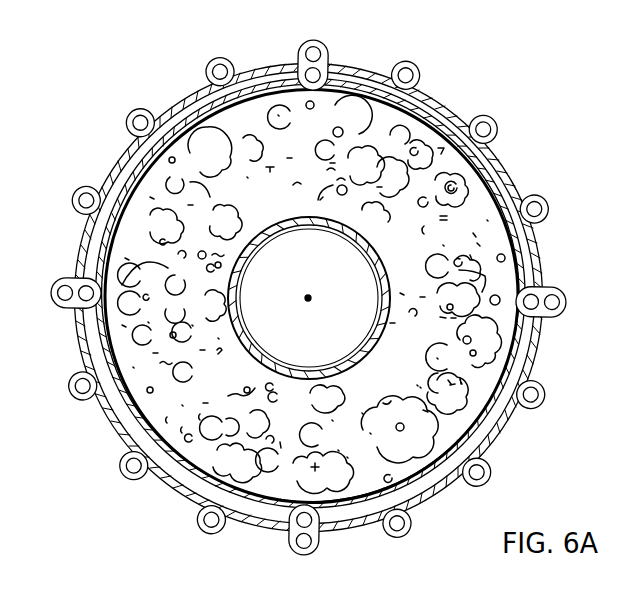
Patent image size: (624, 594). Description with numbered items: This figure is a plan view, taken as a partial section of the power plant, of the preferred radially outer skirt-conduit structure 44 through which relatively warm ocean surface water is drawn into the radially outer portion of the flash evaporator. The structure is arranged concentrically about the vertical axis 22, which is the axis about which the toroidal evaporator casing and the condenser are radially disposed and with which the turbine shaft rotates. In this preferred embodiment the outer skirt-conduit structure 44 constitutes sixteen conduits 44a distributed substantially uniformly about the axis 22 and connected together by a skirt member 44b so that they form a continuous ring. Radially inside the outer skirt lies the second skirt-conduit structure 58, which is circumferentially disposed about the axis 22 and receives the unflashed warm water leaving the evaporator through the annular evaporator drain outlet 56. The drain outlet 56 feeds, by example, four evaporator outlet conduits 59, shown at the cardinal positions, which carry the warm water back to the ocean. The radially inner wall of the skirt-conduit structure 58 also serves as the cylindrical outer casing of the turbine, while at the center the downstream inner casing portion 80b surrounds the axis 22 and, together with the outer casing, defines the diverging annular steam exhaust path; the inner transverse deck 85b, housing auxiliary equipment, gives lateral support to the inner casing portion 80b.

The radially outer skirt-conduit structure 44 is at (313, 297).
The conduits 44a is at (415, 68).
The outer ring 44b is at (492, 150).
The evaporator drain outlet 56 is at (443, 110).
The second skirt-conduit structure 58 is at (490, 220).
The evaporator outlet conduits 59 is at (533, 319).
The vertical axis 22 is at (310, 298).
The transverse deck 85b is at (294, 250).
The inner casing portion 80b is at (275, 374).